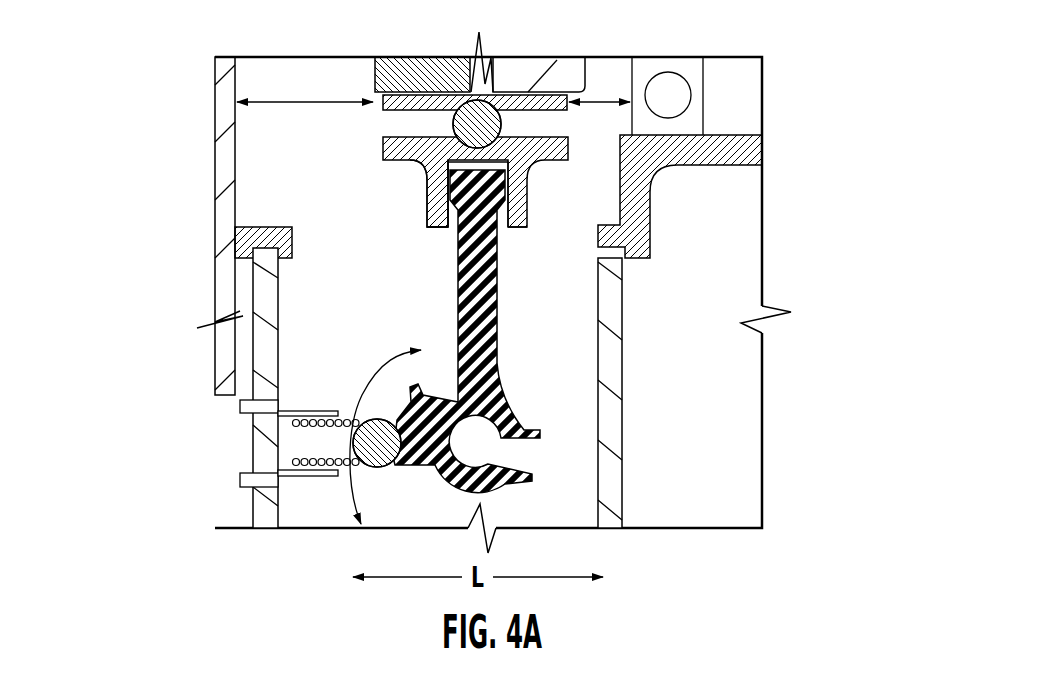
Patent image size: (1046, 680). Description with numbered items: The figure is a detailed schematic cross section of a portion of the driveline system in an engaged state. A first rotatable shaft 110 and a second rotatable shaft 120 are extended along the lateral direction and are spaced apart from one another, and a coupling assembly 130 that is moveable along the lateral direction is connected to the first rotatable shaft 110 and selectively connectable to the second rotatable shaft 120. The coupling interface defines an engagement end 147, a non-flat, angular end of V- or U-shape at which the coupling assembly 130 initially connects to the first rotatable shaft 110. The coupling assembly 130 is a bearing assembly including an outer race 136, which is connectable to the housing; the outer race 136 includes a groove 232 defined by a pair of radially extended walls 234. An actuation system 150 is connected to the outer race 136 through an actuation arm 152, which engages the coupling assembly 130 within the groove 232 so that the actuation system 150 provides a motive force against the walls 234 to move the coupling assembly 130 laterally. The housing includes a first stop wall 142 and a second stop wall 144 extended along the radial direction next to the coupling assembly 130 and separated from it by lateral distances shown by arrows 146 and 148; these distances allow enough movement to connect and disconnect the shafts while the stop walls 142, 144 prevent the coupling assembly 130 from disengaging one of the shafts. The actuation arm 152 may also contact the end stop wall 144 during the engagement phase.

The first rotatable shaft 110 is at (523, 63).
The second rotatable shaft 120 is at (415, 64).
The coupling assembly 130 is at (452, 193).
The outer race 136 is at (427, 200).
The first stop wall 142 is at (242, 172).
The second stop wall 144 is at (597, 430).
The lateral distance 146 is at (318, 101).
The engagement end 147 is at (614, 157).
The lateral distance 148 is at (600, 101).
The actuation system 150 is at (448, 347).
The actuation arm 152 is at (487, 345).
The groove 232 is at (507, 227).
The radially extended walls 234 is at (435, 228).